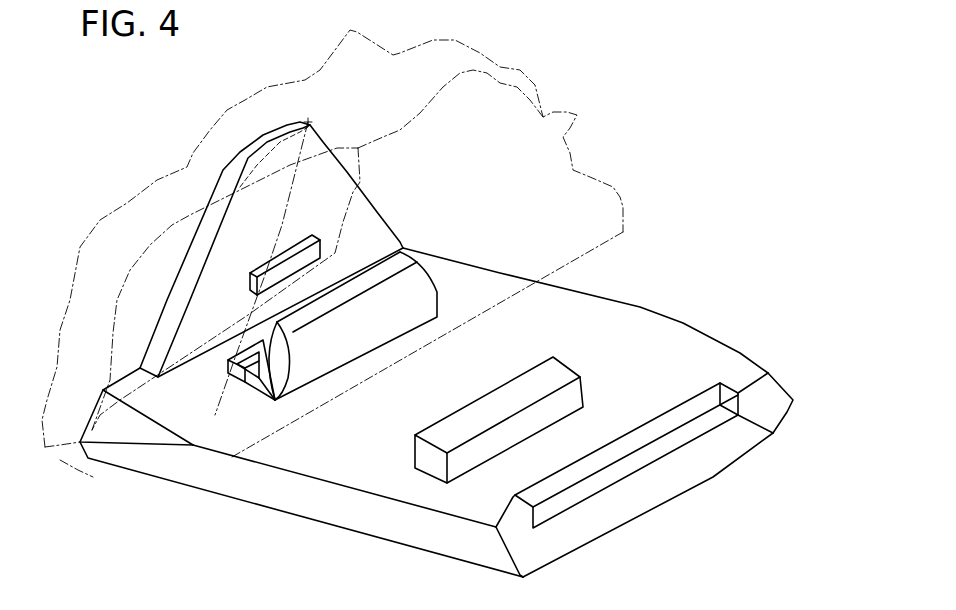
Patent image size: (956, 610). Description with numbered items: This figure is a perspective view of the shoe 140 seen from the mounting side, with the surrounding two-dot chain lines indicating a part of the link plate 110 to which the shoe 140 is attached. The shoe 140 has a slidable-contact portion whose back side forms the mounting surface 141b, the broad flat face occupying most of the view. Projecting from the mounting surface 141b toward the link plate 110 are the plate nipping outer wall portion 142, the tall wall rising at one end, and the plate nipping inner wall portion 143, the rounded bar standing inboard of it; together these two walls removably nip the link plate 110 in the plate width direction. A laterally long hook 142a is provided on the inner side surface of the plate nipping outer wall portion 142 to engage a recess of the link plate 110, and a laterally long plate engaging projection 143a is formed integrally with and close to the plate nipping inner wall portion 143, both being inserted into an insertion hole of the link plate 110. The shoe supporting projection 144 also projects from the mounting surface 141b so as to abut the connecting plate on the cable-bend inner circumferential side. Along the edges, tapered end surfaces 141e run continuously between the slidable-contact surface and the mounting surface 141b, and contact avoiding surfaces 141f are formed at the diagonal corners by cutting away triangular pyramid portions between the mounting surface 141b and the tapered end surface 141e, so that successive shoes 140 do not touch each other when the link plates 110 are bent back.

The link plate 110 is at (332, 253).
The shoe 140 is at (68, 100).
The mounting surface 141b is at (448, 410).
The tapered end surface 141e is at (426, 412).
The contact avoiding surface 141f is at (435, 415).
The plate nipping outer wall portion 142 is at (305, 266).
The hook 142a is at (360, 252).
The plate nipping inner wall portion 143 is at (358, 317).
The plate engaging projection 143a is at (237, 345).
The shoe supporting projection 144 is at (499, 403).